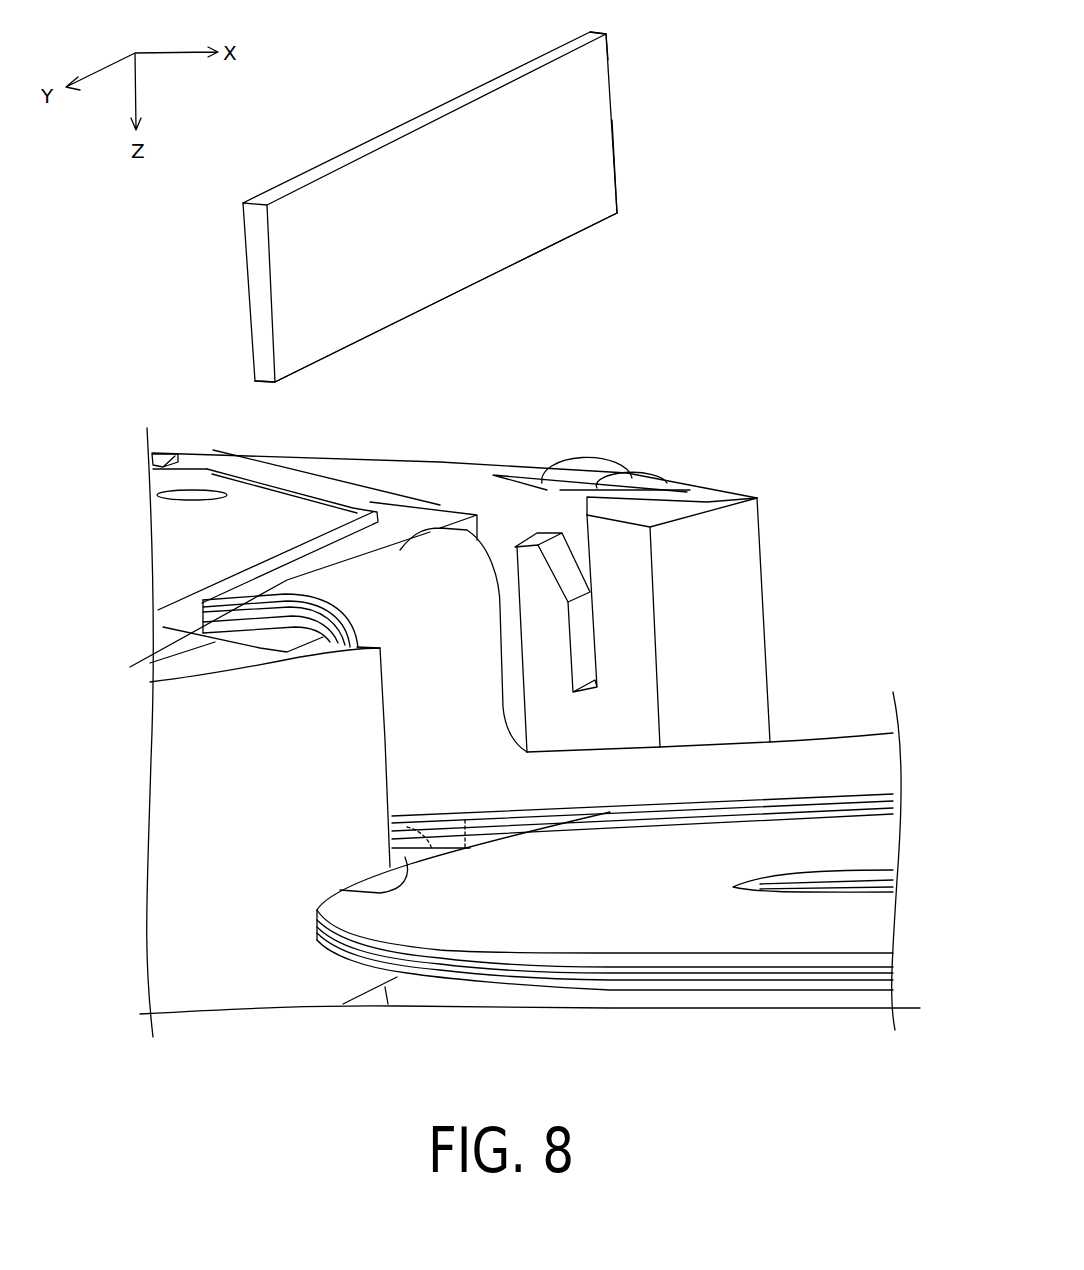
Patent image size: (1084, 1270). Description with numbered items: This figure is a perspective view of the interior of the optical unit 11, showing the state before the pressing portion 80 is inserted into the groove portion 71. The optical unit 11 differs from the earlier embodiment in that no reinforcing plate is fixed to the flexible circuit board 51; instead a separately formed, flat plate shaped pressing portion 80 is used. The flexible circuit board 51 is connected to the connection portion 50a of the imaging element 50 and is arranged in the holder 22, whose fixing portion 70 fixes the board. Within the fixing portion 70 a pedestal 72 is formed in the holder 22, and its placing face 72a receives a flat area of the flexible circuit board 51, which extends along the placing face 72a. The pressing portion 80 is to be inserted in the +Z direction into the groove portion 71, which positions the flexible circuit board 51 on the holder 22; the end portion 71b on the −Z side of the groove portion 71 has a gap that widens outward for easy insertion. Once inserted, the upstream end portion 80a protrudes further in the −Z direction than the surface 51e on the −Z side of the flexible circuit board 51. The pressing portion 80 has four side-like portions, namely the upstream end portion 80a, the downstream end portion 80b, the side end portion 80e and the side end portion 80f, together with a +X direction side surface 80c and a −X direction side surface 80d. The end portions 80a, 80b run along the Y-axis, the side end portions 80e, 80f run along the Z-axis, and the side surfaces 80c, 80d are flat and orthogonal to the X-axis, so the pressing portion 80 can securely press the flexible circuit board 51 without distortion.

The optical unit 11 is at (897, 351).
The holder 22 is at (233, 744).
The imaging element 50 is at (258, 497).
The connection portion 50a is at (203, 600).
The flexible circuit board 51 is at (803, 737).
The surface on the −Z direction side 51e is at (400, 562).
The fixing portion 70 is at (765, 444).
The groove portion 71 is at (280, 628).
The end portion 71b is at (557, 557).
The pedestal 72 is at (340, 888).
The placing face 72a is at (407, 827).
The pressing portion 80 is at (580, 113).
The upstream end portion 80a is at (445, 108).
The downstream end portion 80b is at (513, 263).
The +X direction side surface 80c is at (577, 172).
The −X direction side surface 80d is at (248, 268).
The side end portion 80e is at (610, 73).
The side end portion 80f is at (252, 222).